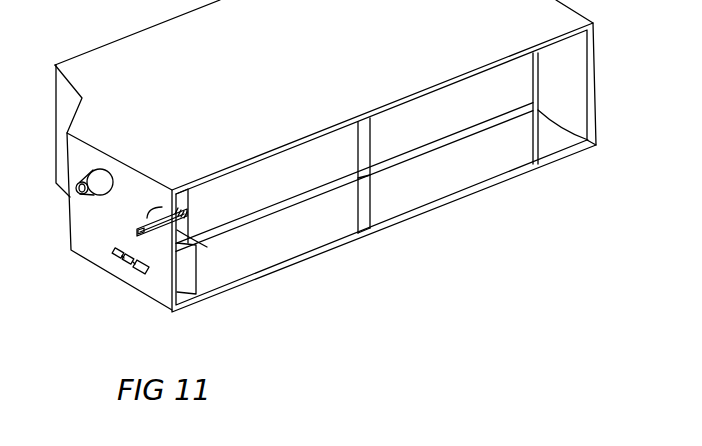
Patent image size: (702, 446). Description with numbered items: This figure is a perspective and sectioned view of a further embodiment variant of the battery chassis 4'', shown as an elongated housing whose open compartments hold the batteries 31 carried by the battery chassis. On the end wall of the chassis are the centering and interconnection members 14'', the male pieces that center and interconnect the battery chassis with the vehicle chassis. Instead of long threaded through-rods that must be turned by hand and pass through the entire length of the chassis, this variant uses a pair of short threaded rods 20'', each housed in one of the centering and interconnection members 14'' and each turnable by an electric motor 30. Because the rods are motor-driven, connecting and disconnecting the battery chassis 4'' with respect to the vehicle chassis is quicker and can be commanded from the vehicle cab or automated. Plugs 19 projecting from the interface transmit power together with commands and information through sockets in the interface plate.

The battery chassis 4'' is at (325, 156).
The centering and interconnection member 14'' is at (124, 164).
The plug 19 is at (133, 274).
The short threaded rod 20'' is at (157, 276).
The electric motor 30 is at (180, 231).
The batteries 31 is at (445, 120).